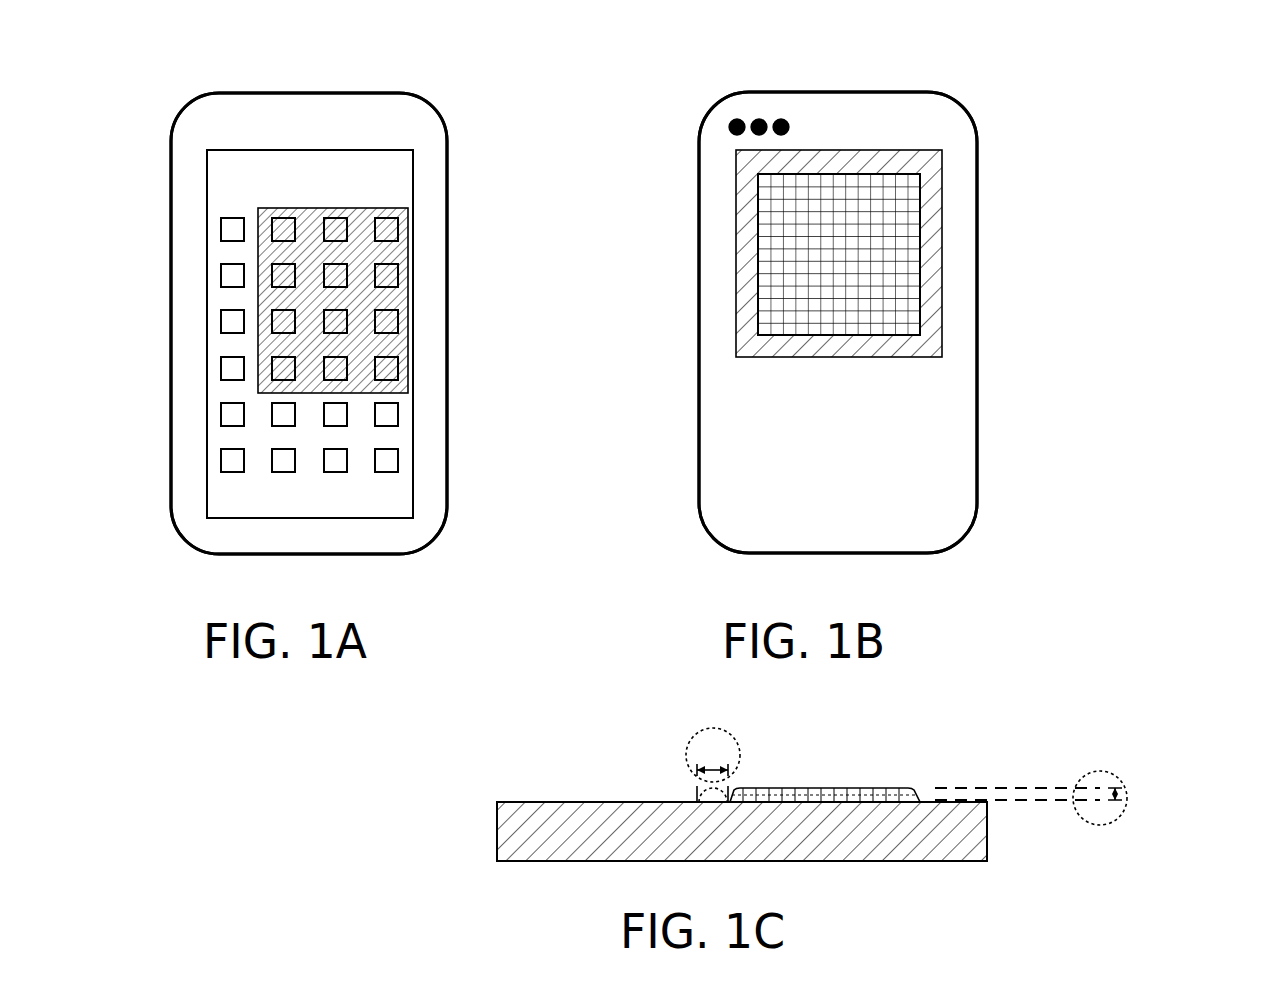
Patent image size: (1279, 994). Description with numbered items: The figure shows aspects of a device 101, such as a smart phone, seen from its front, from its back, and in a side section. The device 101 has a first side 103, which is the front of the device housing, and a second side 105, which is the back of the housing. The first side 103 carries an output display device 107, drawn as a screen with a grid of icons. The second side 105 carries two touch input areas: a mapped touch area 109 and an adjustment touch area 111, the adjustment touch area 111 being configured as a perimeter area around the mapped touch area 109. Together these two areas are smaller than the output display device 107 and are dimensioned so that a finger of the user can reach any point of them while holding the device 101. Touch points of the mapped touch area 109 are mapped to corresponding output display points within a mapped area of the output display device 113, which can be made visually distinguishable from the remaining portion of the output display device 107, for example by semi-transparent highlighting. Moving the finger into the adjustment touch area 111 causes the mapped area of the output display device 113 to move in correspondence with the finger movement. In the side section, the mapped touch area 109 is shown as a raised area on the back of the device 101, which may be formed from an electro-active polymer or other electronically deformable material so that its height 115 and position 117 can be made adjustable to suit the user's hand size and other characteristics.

In FIG. 1A, the device 101 is at (345, 93).
In FIG. 1B, the device 101 is at (890, 92).
In FIG. 1C, the device 101 is at (520, 802).
In FIG. 1A, the first side 103 is at (230, 120).
In FIG. 1B, the second side 105 is at (743, 103).
In FIG. 1A, the output display device 107 is at (207, 330).
In FIG. 1B, the mapped touch area 109 is at (853, 218).
In FIG. 1C, the mapped touch area 109 is at (760, 788).
In FIG. 1B, the adjustment touch area 111 is at (923, 320).
In FIG. 1A, the mapped area of the output display device 113 is at (353, 208).
In FIG. 1C, the height 115 is at (1108, 772).
In FIG. 1C, the position 117 is at (723, 730).